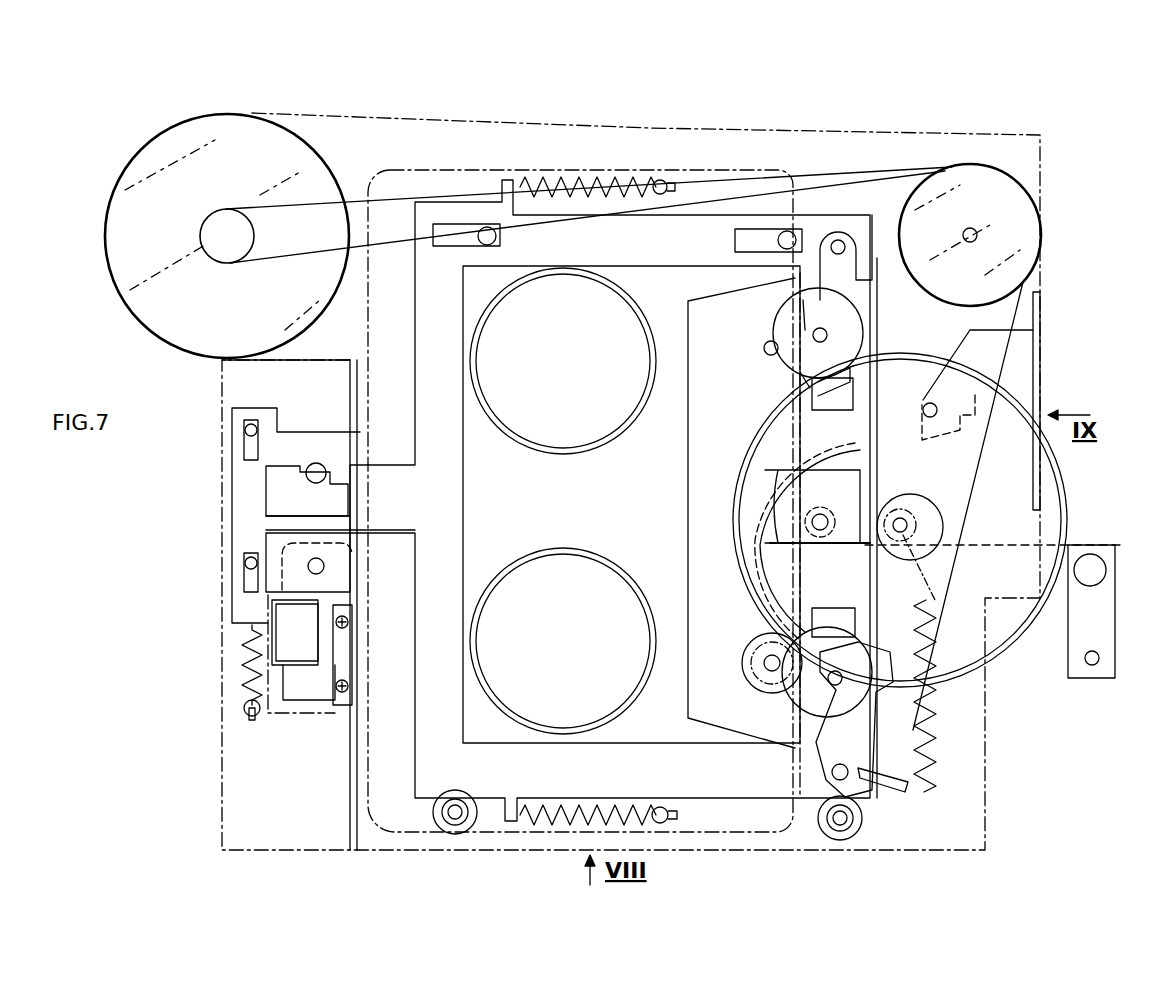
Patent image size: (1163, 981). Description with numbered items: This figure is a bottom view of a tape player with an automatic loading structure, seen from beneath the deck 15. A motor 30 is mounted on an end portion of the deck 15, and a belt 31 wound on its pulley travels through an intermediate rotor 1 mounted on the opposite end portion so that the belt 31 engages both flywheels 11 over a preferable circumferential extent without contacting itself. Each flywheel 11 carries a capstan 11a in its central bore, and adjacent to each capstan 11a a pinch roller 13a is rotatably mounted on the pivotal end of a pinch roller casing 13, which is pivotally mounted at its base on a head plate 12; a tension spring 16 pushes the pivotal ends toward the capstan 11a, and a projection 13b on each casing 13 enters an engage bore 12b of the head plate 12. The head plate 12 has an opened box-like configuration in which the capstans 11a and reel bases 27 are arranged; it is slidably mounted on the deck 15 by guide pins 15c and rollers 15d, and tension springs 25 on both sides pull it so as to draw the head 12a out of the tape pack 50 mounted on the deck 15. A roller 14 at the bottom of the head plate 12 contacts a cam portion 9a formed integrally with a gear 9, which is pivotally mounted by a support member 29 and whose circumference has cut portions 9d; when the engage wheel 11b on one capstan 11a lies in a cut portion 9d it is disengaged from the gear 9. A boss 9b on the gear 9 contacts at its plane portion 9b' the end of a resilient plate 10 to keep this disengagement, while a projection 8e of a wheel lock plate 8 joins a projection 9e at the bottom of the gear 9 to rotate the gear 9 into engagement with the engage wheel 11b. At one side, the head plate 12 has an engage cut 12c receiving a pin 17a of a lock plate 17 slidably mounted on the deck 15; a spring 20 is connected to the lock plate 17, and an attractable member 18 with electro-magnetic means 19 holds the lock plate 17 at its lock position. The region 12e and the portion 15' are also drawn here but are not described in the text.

The intermediate rotor 1 is at (1035, 228).
The wheel lock plate 8 is at (1041, 378).
The projection 8e is at (928, 437).
The gear 9 is at (1067, 500).
The cam portion 9a is at (935, 548).
The boss 9b is at (919, 513).
The plane portion 9b' is at (926, 570).
The cut portion 9d is at (785, 618).
The projection 9e is at (932, 402).
The resilient plate 10 is at (1100, 604).
The flywheel 11 is at (683, 465).
The capstan 11a is at (766, 354).
The engage wheel 11b is at (746, 666).
The head plate 12 is at (710, 785).
The head 12a is at (770, 478).
The engage bore 12b is at (810, 392).
The engage cut 12c is at (445, 225).
The edge portion 12e is at (272, 488).
The pinch roller casing 13 is at (888, 317).
The pinch roller 13a is at (775, 318).
The projection 13b is at (823, 398).
The roller 14 is at (832, 510).
The deck 15 is at (588, 520).
The frame portion 15' is at (286, 615).
The guide pin 15c is at (487, 227).
The roller 15d is at (470, 832).
The tension spring 16 is at (922, 715).
The lock plate 17 is at (240, 510).
The pin 17a is at (316, 463).
The attractable member 18 is at (309, 562).
The electro-magnetic means 19 is at (316, 690).
The spring 20 is at (245, 660).
The tension spring 25 is at (598, 186).
The reel base 27 is at (530, 442).
The support member 29 is at (918, 526).
The motor 30 is at (183, 330).
The belt 31 is at (833, 175).
The tape pack 50 is at (693, 140).